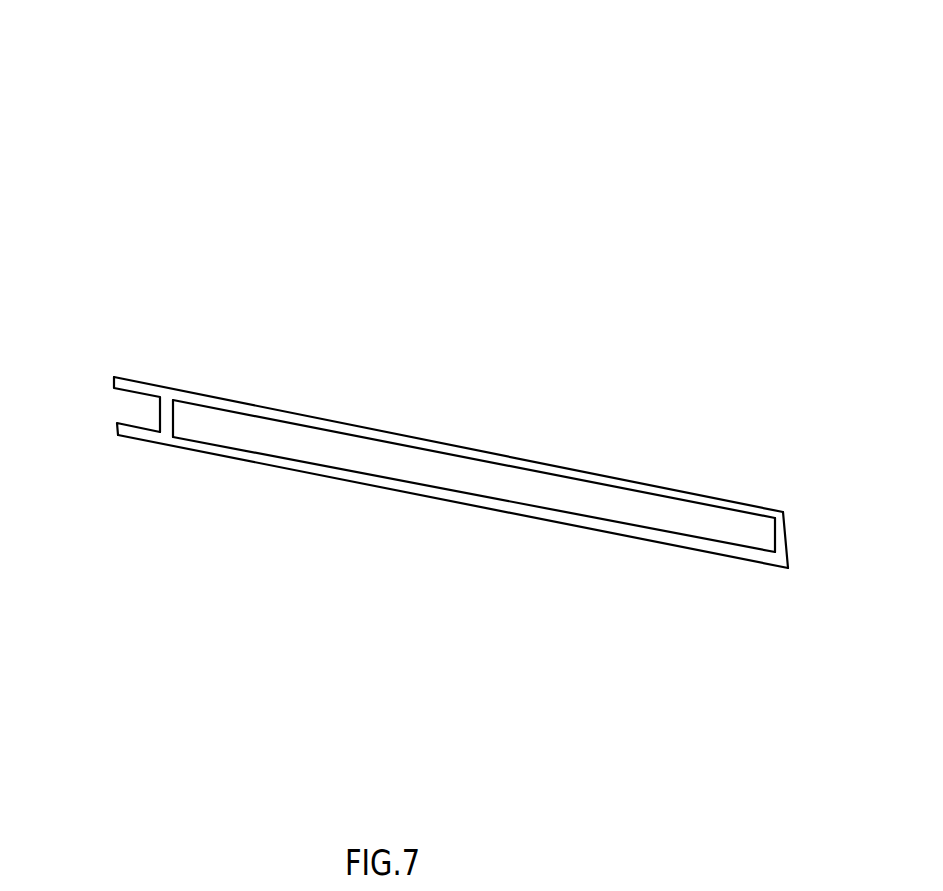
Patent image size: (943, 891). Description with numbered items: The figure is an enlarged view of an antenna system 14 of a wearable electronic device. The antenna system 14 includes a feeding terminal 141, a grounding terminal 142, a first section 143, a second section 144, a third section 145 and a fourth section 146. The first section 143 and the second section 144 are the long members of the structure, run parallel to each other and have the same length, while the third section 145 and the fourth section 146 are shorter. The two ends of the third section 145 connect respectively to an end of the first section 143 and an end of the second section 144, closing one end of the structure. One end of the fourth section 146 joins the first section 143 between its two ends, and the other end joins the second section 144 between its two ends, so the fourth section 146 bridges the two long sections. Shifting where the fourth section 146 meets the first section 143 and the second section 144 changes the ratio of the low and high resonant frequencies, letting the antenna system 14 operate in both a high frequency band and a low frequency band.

The antenna system 14 is at (107, 107).
The feeding terminal 141 is at (210, 450).
The grounding terminal 142 is at (137, 437).
The first section 143 is at (477, 453).
The second section 144 is at (465, 502).
The third section 145 is at (781, 535).
The fourth section 146 is at (168, 415).